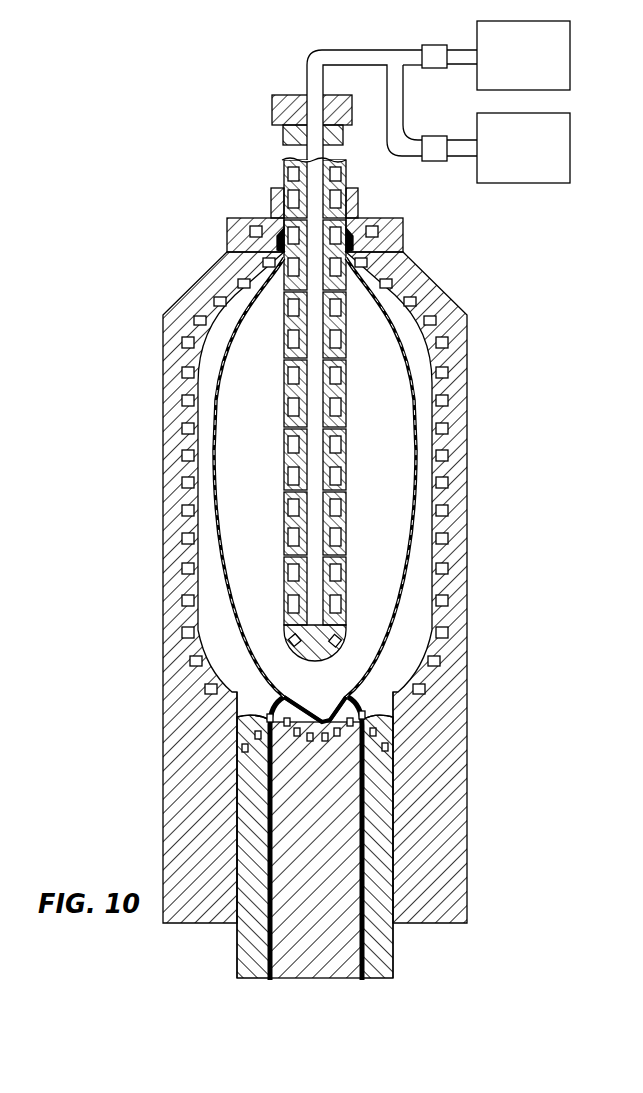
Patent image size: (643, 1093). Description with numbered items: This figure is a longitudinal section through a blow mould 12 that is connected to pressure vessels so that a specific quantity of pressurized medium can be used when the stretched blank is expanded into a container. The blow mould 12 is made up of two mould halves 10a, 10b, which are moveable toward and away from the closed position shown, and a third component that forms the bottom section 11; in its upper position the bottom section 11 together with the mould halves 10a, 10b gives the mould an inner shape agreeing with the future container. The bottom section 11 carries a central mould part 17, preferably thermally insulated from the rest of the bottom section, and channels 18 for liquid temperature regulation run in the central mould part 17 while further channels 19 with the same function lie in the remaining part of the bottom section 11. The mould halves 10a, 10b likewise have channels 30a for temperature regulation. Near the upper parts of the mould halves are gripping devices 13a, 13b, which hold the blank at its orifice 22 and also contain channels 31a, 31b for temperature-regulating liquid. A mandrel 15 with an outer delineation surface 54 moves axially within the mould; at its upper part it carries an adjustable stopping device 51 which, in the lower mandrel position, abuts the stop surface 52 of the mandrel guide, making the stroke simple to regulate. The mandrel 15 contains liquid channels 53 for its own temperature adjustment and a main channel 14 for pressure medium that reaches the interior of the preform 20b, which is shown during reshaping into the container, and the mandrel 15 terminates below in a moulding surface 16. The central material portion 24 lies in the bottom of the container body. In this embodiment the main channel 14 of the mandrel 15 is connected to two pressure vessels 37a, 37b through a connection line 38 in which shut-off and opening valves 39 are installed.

The mould half 10a is at (163, 458).
The mould half 10b is at (460, 463).
The bottom section 11 is at (385, 877).
The blow mould 12 is at (484, 430).
The gripping device 13a is at (238, 243).
The gripping device 13b is at (392, 241).
The main channel 14 is at (318, 383).
The mandrel 15 is at (346, 414).
The moulding surface 16 is at (325, 658).
The central mould part 17 is at (335, 825).
The channels 18 is at (372, 745).
The channels 19 is at (262, 716).
The preform 20b is at (415, 392).
The orifice 22 is at (350, 240).
The central material portion 24 is at (314, 712).
The channels 30a is at (215, 300).
The channels 31a is at (238, 228).
The channels 31b is at (390, 226).
The pressure vessel 37a is at (478, 33).
The pressure vessel 37b is at (515, 183).
The connection line 38 is at (312, 62).
The shut-off and opening valves 39 is at (435, 68).
The adjustable stopping device 51 is at (272, 113).
The stop surface 52 is at (283, 186).
The liquid channels 53 is at (288, 384).
The outer delineation surface 54 is at (346, 458).